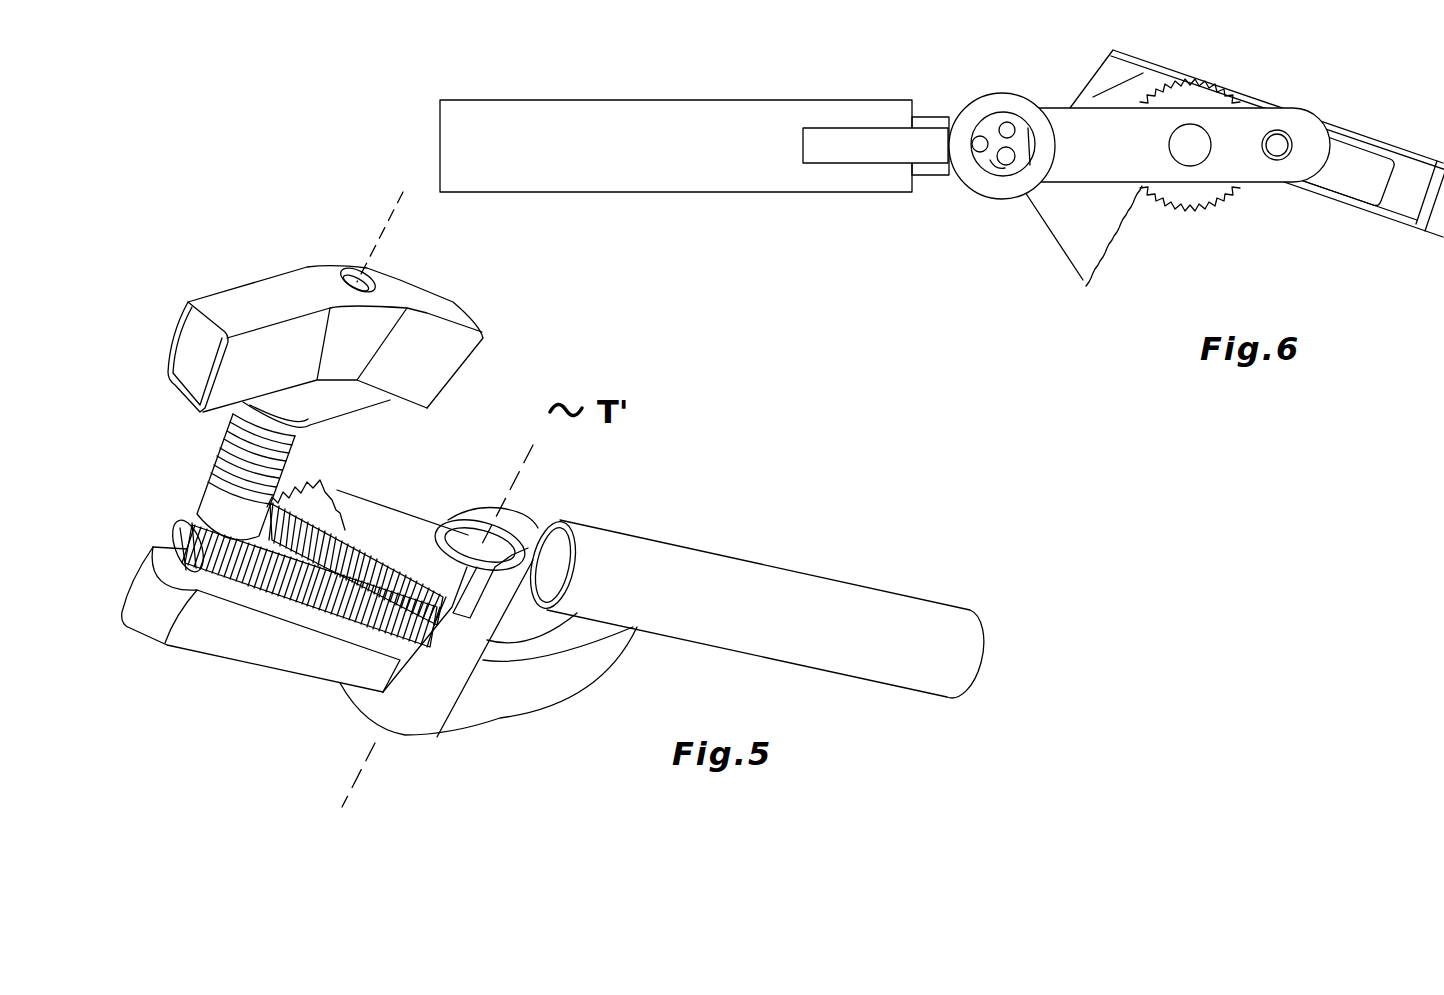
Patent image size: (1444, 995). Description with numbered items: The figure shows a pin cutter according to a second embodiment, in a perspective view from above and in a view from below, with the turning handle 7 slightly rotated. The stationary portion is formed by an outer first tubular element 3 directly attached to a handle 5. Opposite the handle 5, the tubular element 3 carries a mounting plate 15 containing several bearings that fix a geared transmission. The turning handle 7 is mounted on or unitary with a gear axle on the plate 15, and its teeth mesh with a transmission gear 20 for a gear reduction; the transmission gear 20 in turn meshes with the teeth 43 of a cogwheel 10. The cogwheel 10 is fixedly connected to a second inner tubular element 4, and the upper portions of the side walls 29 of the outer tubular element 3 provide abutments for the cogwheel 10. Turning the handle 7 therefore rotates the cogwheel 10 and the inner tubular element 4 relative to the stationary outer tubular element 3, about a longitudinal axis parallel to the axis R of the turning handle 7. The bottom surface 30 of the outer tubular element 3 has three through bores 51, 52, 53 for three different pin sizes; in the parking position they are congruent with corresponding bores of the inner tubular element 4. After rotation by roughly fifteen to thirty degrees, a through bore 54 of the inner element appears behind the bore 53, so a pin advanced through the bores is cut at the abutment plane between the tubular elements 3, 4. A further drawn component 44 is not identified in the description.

In FIG. 5, the outer first tubular element 3 is at (418, 728).
In FIG. 6, the outer first tubular element 3 is at (957, 110).
In FIG. 5, the second inner tubular element 4 is at (477, 580).
In FIG. 5, the handle 5 is at (762, 580).
In FIG. 6, the handle 5 is at (700, 175).
In FIG. 5, the turning handle 7 is at (452, 350).
In FIG. 6, the turning handle 7 is at (1355, 158).
In FIG. 5, the cogwheel 10 is at (400, 527).
In FIG. 6, the cogwheel 10 is at (1077, 253).
In FIG. 5, the mounting plate 15 is at (157, 618).
In FIG. 6, the mounting plate 15 is at (1243, 127).
In FIG. 5, the transmission gear 20 is at (300, 560).
In FIG. 6, the transmission gear 20 is at (1196, 197).
In FIG. 5, the side walls 29 is at (487, 597).
In FIG. 6, the bottom surface 30 is at (1017, 187).
In FIG. 5, the teeth 43 is at (427, 630).
In FIG. 5, the threaded spindle 44 is at (187, 547).
In FIG. 6, the through bore 51 is at (980, 140).
In FIG. 6, the through bore 52 is at (1007, 127).
In FIG. 6, the through bore 53 is at (993, 163).
In FIG. 6, the through bore 54 is at (1007, 163).
In FIG. 5, the axis of the turning handle R is at (388, 226).